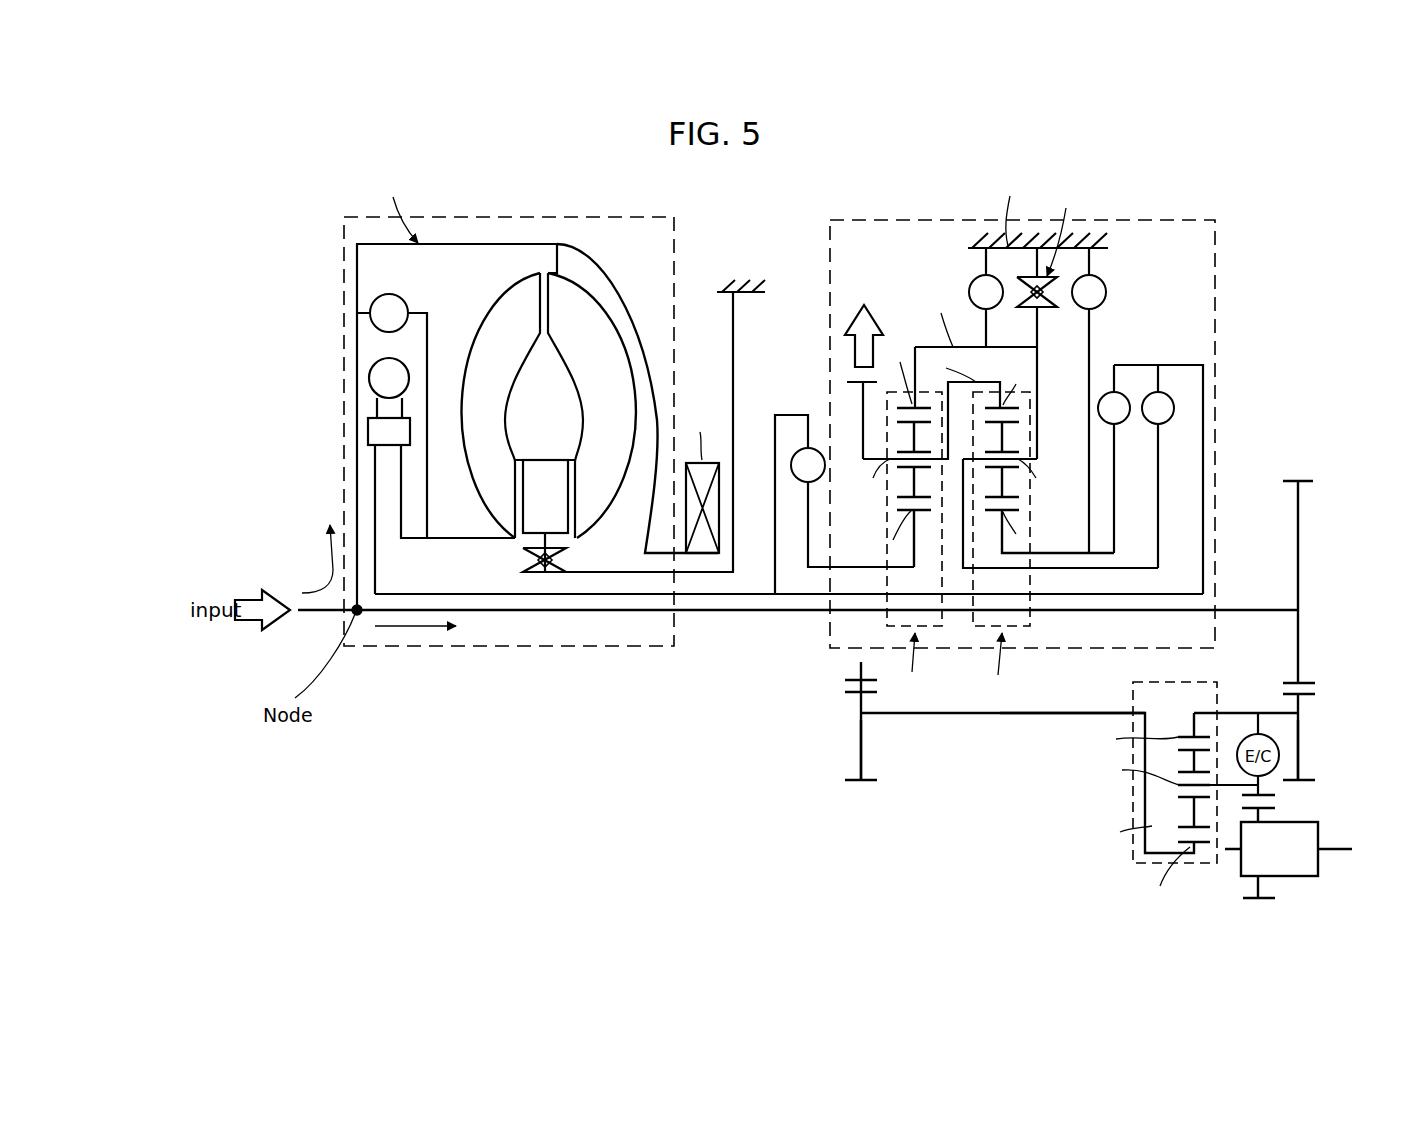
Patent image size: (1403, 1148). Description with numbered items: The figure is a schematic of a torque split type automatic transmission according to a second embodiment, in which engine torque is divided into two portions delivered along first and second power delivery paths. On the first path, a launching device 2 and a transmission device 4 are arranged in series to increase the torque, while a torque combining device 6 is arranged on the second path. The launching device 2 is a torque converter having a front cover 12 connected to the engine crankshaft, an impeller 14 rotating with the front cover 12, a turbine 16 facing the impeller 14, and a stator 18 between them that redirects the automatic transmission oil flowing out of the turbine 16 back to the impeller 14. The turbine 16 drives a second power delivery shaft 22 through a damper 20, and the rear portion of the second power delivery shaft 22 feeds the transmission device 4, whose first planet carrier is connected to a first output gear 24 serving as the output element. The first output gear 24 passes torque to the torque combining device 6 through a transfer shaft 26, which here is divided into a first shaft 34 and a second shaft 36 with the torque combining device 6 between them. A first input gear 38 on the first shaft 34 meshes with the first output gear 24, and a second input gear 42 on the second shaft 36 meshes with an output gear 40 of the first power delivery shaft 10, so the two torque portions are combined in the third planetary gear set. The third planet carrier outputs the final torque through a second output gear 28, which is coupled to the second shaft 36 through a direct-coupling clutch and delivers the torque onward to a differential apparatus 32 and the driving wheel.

The launching device 2 is at (389, 655).
The transmission device 4 is at (1222, 246).
The torque combining device 6 is at (1133, 781).
The first power delivery shaft 10 is at (698, 618).
The front cover 12 is at (357, 410).
The impeller 14 is at (582, 312).
The turbine 16 is at (506, 305).
The stator 18 is at (533, 513).
The damper 20 is at (385, 378).
The second power delivery shaft 22 is at (586, 598).
The first output gear 24 is at (860, 382).
The transfer shaft 26 is at (992, 750).
The second output gear 28 is at (1262, 795).
The differential apparatus 32 is at (1318, 831).
The first shaft 34 is at (1056, 713).
The second shaft 36 is at (1240, 712).
The first input gear 38 is at (860, 730).
The output gear 40 is at (1299, 553).
The second input gear 42 is at (1300, 760).